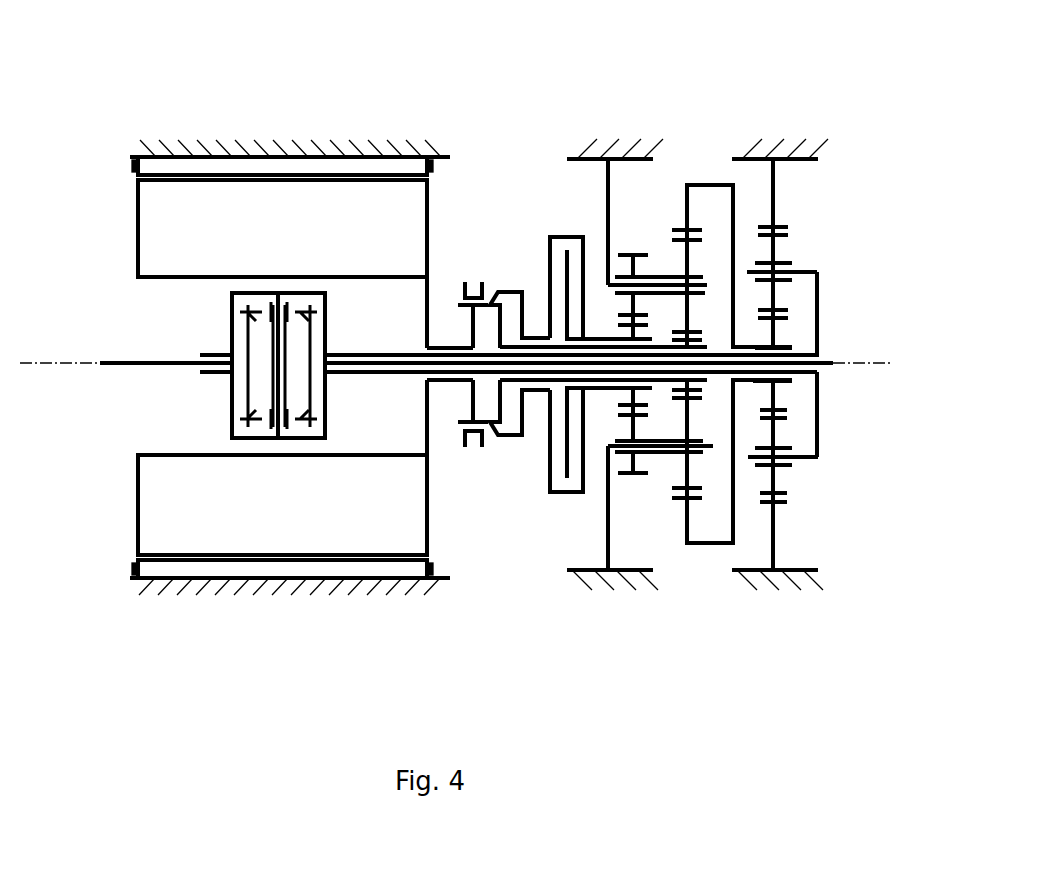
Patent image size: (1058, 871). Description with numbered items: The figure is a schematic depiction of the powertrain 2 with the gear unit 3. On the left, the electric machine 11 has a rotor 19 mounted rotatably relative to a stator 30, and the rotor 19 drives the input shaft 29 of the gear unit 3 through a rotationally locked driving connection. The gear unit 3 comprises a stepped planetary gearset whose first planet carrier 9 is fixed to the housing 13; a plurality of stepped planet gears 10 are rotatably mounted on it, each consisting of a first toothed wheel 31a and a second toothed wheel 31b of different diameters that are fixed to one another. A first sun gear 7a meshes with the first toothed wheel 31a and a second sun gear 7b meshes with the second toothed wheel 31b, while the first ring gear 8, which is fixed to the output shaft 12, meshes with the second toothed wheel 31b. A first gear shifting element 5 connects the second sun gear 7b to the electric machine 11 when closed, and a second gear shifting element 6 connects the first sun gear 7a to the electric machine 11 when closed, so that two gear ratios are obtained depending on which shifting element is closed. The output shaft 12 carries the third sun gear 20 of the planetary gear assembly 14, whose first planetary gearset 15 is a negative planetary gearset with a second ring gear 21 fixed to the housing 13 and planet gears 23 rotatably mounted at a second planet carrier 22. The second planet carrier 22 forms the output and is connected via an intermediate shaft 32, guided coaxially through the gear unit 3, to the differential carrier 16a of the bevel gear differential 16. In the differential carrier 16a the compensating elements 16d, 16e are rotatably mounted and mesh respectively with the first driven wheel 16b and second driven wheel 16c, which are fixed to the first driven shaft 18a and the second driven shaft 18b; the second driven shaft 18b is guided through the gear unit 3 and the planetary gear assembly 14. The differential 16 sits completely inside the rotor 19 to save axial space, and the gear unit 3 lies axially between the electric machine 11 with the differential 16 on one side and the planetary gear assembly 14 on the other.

The powertrain 2 is at (818, 88).
The gear unit 3 is at (494, 84).
The first gear shifting element 5 is at (477, 280).
The second gear shifting element 6 is at (562, 238).
The first sun gear 7a is at (617, 337).
The second sun gear 7b is at (700, 340).
The first ring gear 8 is at (674, 229).
The first planet carrier 9 is at (707, 283).
The stepped planet gear 10 is at (658, 455).
The electric machine 11 is at (300, 606).
The output shaft 12 is at (707, 207).
The housing 13 is at (626, 153).
The planetary gear assembly 14 is at (770, 612).
The first planetary gearset 15 is at (808, 542).
The differential 16 is at (208, 347).
The differential carrier 16a is at (327, 397).
The first driven wheel 16b is at (243, 332).
The second driven wheel 16c is at (310, 342).
The compensating element 16d is at (262, 300).
The compensating element 16e is at (300, 418).
The first driven shaft 18a is at (121, 363).
The second driven shaft 18b is at (823, 362).
The rotor 19 is at (178, 497).
The third sun gear 20 is at (783, 407).
The second ring gear 21 is at (778, 223).
The second planet carrier 22 is at (812, 268).
The planet gear 23 is at (775, 485).
The input shaft 29 is at (445, 382).
The stator 30 is at (180, 566).
The first toothed wheel 31a is at (627, 476).
The second toothed wheel 31b is at (700, 492).
The intermediate shaft 32 is at (377, 353).